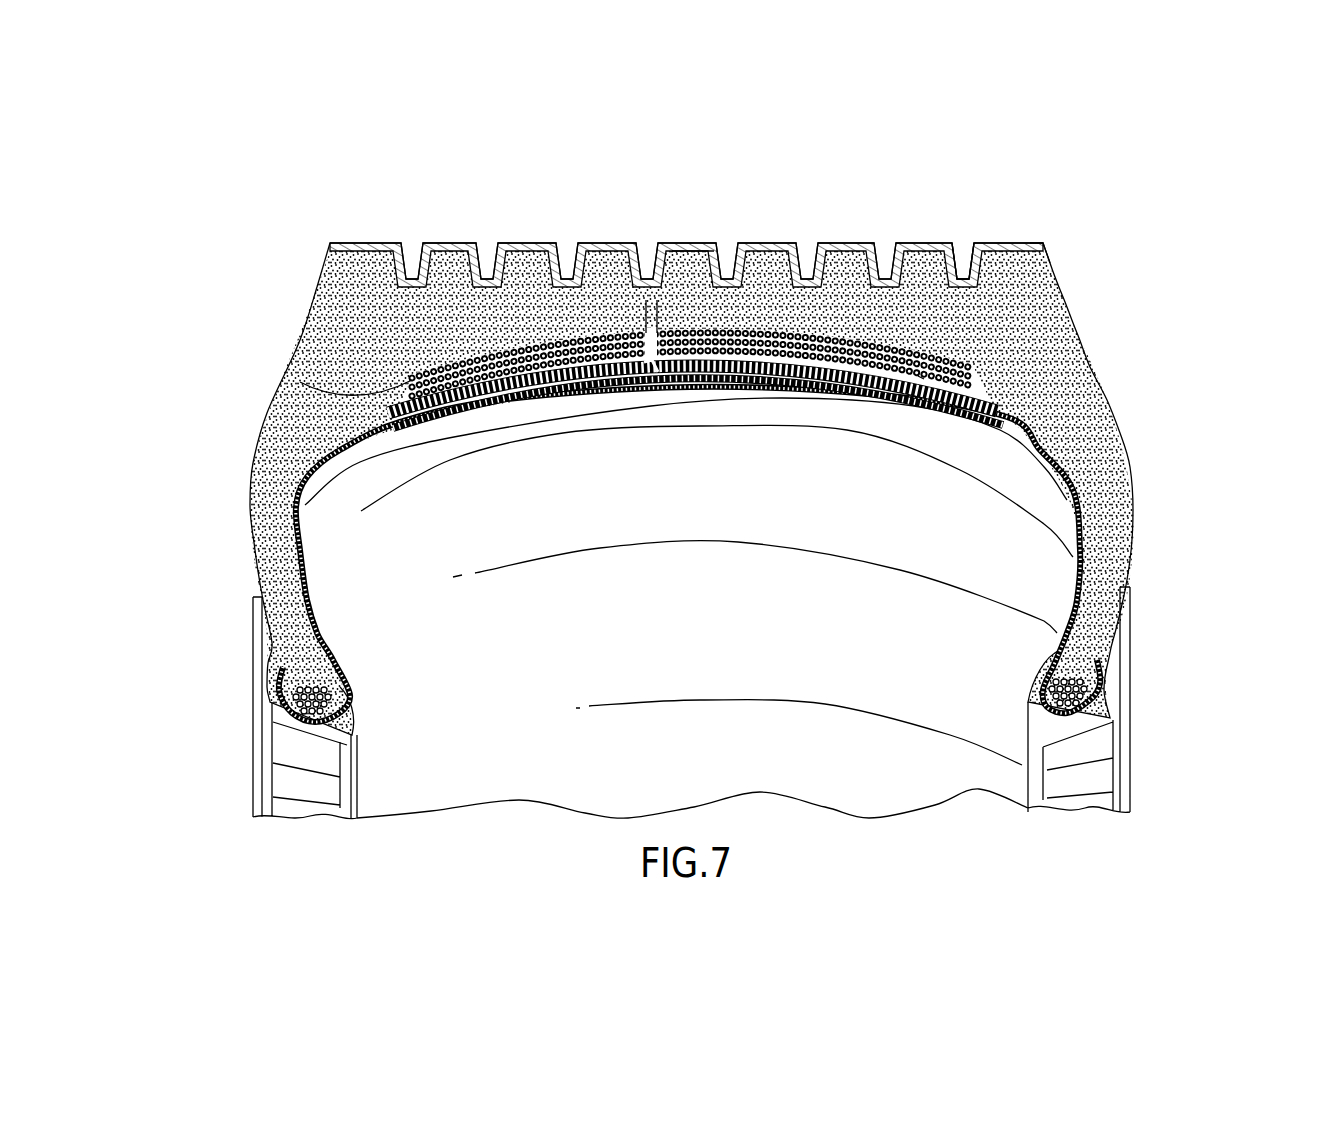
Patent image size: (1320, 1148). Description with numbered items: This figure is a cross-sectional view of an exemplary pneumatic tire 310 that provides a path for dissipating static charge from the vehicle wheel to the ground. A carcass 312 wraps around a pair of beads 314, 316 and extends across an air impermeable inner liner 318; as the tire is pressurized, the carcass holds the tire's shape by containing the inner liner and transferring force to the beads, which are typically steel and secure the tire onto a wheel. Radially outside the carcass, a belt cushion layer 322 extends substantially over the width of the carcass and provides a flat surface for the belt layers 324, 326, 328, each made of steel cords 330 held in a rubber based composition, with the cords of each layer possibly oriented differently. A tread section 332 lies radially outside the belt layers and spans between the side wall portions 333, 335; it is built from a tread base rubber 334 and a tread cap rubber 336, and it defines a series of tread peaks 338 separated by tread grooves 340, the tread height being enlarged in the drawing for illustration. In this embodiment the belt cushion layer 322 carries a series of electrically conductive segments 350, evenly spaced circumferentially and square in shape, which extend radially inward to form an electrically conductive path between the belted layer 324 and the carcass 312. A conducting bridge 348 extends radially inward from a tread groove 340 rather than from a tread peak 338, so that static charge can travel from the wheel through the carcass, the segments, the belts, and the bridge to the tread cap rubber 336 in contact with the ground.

The pneumatic tire 310 is at (893, 170).
The carcass 312 is at (315, 627).
The bead 314 is at (338, 687).
The bead 316 is at (1087, 707).
The inner liner 318 is at (300, 557).
The belt cushion layer 322 is at (1003, 413).
The belt layer 324 is at (990, 397).
The belt layer 326 is at (300, 382).
The belt layer 328 is at (968, 365).
The steel cords 330 is at (920, 377).
The tread section 332 is at (282, 288).
The side wall portion 333 is at (250, 477).
The tread base rubber 334 is at (360, 258).
The side wall portion 335 is at (1133, 470).
The tread cap rubber 336 is at (1045, 242).
The tread peak 338 is at (693, 260).
The tread groove 340 is at (964, 235).
The conducting bridge 348 is at (640, 305).
The electrically conductive segments 350 is at (650, 367).